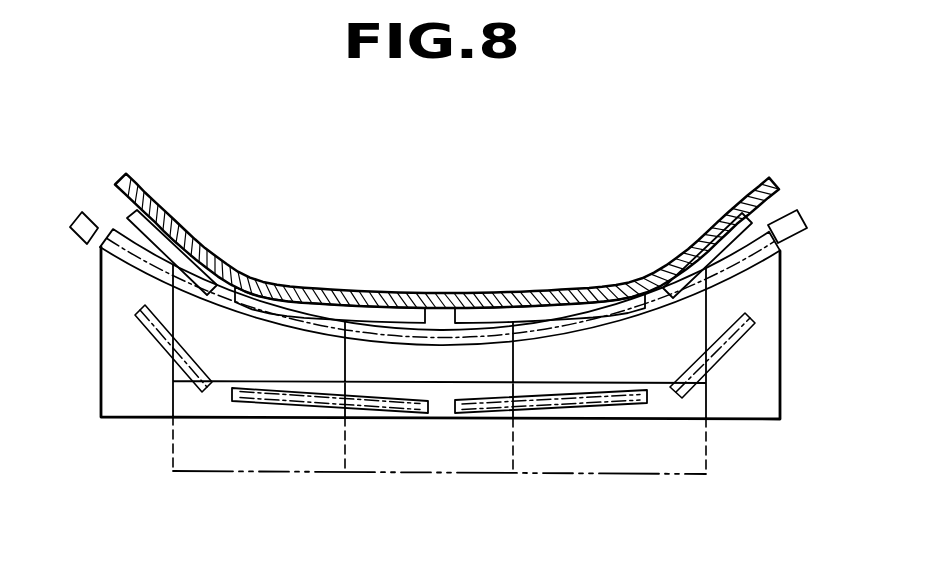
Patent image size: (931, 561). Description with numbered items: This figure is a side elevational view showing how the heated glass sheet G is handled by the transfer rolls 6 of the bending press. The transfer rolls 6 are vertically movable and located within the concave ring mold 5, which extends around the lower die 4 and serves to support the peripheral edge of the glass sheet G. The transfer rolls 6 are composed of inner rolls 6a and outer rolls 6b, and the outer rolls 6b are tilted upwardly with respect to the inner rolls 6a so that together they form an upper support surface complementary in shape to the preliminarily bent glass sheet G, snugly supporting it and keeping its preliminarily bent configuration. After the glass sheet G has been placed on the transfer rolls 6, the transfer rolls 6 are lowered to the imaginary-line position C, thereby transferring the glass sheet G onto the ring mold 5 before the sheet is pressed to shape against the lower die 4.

The glass sheet G is at (733, 209).
The lower die 4 is at (773, 388).
The concave ring mold 5 is at (803, 212).
The transfer rolls 6 is at (488, 318).
The inner rolls 6a is at (313, 305).
The outer rolls 6b is at (156, 246).
The imaginary-line position C is at (641, 404).